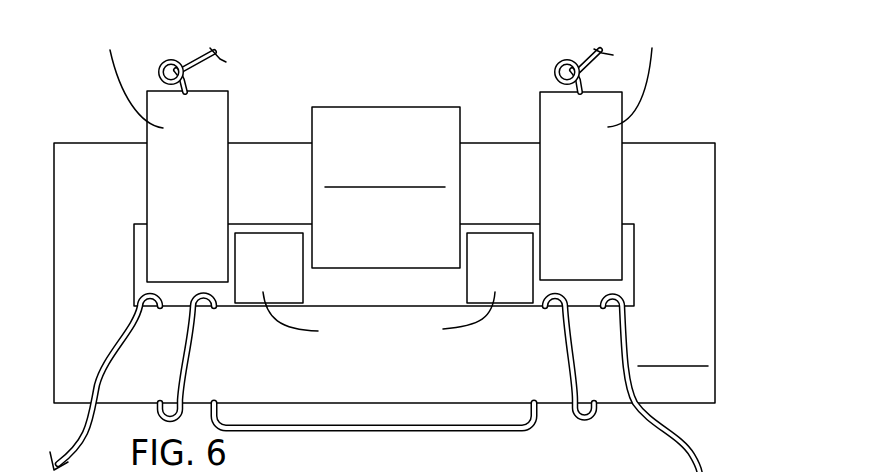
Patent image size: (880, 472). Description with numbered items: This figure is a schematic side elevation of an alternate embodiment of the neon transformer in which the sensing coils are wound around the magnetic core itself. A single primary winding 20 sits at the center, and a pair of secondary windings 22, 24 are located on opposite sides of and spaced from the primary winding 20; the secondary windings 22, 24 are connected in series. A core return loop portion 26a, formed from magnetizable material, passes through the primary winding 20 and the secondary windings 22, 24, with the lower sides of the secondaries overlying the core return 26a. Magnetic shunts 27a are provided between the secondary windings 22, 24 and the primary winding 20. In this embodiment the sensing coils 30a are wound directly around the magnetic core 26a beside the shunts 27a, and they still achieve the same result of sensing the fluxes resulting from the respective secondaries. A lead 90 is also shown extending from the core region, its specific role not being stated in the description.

The primary winding 20 is at (367, 140).
The secondary winding 22 is at (190, 132).
The secondary winding 24 is at (570, 138).
The core return loop portion 26a is at (695, 264).
The magnetic shunts 27a is at (490, 263).
The sensing coils 30a is at (570, 345).
The wire lead 90 is at (374, 437).